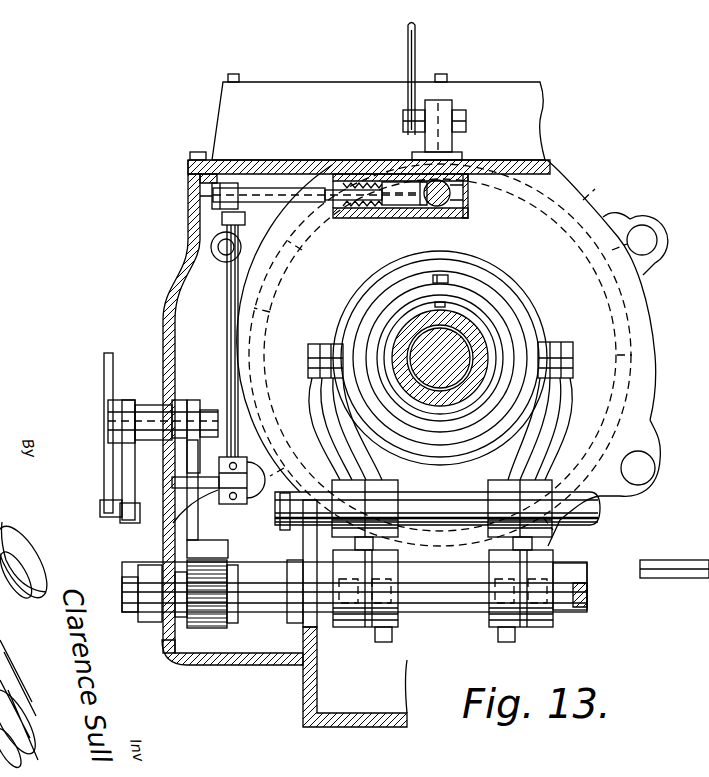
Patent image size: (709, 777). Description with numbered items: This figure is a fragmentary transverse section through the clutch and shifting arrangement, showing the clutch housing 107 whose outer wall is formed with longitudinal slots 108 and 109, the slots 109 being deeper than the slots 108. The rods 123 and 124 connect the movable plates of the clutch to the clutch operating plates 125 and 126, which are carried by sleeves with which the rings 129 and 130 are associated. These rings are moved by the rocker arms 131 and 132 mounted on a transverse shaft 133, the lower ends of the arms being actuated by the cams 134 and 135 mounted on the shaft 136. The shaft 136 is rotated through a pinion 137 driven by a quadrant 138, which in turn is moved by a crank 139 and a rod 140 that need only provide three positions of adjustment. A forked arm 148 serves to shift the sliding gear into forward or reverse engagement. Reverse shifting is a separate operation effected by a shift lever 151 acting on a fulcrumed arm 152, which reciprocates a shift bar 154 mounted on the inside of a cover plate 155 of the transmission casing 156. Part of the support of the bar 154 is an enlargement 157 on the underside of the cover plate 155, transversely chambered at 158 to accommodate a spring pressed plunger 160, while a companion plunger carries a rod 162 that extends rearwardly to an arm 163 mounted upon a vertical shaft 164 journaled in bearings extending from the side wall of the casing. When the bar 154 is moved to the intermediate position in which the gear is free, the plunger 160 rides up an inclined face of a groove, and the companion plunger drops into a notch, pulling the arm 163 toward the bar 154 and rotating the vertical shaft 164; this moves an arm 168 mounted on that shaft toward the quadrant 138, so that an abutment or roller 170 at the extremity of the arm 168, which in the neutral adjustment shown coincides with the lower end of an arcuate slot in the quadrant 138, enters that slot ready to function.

The clutch housing 107 is at (566, 205).
The longitudinal slots 108 is at (645, 412).
The longitudinal slots 109 is at (628, 292).
The rod 123 is at (645, 470).
The rod 124 is at (646, 244).
The clutch operating plate 125 is at (524, 273).
The clutch operating plate 126 is at (632, 214).
The ring 129 is at (512, 337).
The ring 130 is at (519, 312).
The rocker arm 131 is at (333, 448).
The rocker arm 132 is at (340, 436).
The transverse shaft 133 is at (405, 512).
The cam 134 is at (335, 590).
The cam 135 is at (497, 634).
The shaft 136 is at (420, 590).
The pinion 137 is at (197, 620).
The quadrant 138 is at (187, 545).
The crank 139 is at (110, 478).
The rod 140 is at (104, 452).
The forked arm 148 is at (708, 540).
The shift lever 151 is at (417, 48).
The arm 152 is at (453, 138).
The shift bar 154 is at (437, 208).
The cover plate 155 is at (290, 166).
The transmission casing 156 is at (182, 250).
The enlargement 157 is at (350, 218).
The chamber 158 is at (460, 203).
The spring pressed plunger 160 is at (400, 182).
The rod 162 is at (312, 203).
The arm 163 is at (212, 197).
The vertical shaft 164 is at (227, 318).
The arm 168 is at (217, 505).
The abutment or roller 170 is at (172, 536).